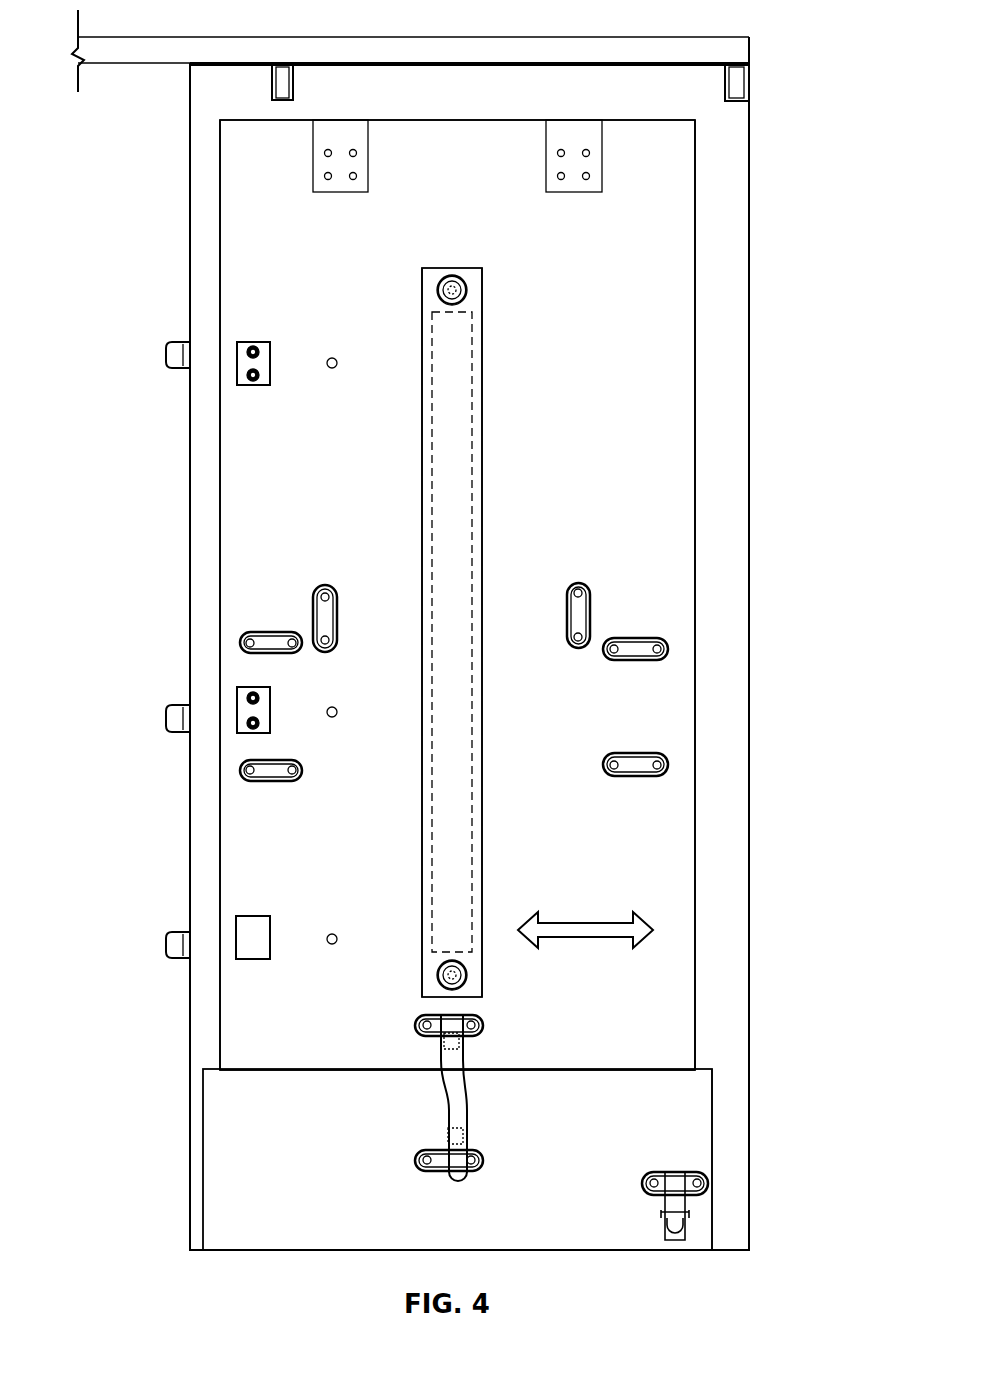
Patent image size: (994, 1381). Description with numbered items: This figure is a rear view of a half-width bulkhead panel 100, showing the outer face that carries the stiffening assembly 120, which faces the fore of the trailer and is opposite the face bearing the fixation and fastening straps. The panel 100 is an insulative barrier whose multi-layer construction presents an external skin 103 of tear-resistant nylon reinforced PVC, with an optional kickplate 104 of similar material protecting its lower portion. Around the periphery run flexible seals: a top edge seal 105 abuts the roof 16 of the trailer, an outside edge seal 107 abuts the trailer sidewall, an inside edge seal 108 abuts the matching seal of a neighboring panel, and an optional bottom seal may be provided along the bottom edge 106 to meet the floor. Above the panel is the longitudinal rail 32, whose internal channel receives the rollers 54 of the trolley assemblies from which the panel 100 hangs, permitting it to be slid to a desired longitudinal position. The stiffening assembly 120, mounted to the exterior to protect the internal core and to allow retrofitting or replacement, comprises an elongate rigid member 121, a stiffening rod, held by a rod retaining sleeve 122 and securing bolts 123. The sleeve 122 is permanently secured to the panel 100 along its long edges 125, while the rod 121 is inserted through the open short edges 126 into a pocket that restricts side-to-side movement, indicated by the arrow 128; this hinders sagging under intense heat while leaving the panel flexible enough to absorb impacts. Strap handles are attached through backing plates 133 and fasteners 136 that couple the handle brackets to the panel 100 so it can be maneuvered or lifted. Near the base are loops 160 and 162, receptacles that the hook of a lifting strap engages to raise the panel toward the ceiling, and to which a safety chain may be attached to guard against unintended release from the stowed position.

The roof 16 is at (270, 48).
The panel 100 is at (145, 134).
The external skin 103 is at (620, 281).
The kickplate 104 is at (640, 1135).
The top edge seal 105 is at (627, 92).
The bottom edge 106 is at (277, 1266).
The outside edge seal 107 is at (728, 510).
The inside edge seal 108 is at (205, 518).
The rail 32 is at (272, 82).
The rollers 54 is at (283, 80).
The stiffening assembly 120 is at (434, 611).
The elongate rigid member 121 is at (448, 398).
The rod retaining sleeve 122 is at (430, 300).
The securing bolts 123 is at (452, 290).
The long edges 125 is at (492, 482).
The open short edges 126 is at (468, 262).
The direction of lateral movement 128 is at (588, 922).
The backing plates 133 is at (240, 636).
The fasteners 136 is at (244, 645).
The loop 160 is at (460, 1185).
The loop 162 is at (675, 1228).